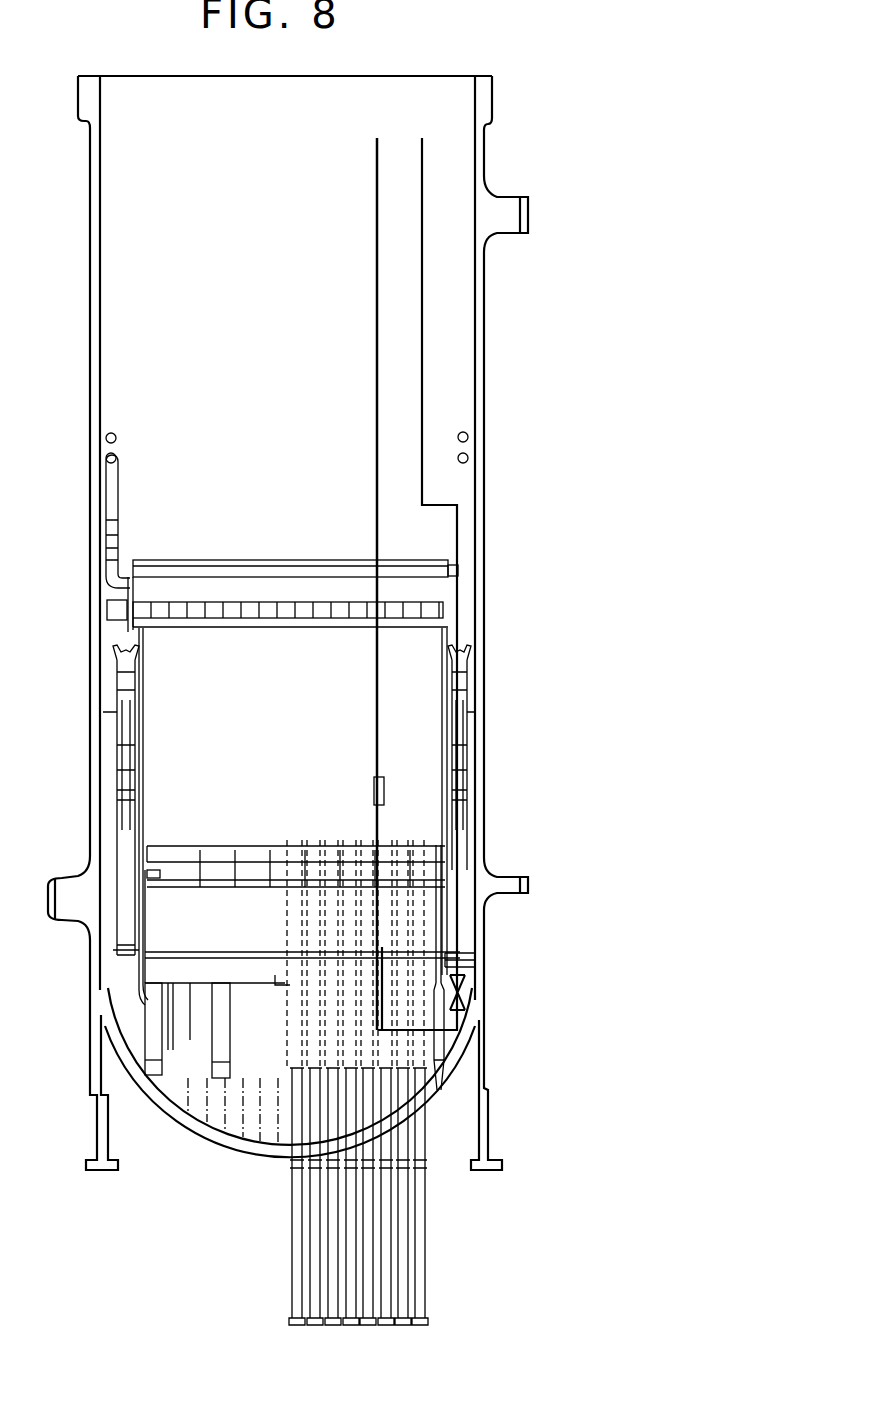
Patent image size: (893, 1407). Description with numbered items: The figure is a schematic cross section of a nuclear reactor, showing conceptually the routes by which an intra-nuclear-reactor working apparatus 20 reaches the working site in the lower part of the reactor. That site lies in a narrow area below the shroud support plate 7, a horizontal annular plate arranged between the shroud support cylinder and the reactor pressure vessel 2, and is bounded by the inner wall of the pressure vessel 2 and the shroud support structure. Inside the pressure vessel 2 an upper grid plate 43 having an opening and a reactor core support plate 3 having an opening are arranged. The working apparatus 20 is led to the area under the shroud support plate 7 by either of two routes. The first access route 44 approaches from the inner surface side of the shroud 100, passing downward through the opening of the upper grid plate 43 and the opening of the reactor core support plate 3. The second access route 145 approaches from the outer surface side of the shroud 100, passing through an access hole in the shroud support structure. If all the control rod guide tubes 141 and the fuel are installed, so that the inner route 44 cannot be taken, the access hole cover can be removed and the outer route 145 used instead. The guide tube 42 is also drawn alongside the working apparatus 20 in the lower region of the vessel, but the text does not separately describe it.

The nuclear reactor pressure vessel 2 is at (485, 381).
The reactor core support plate 3 is at (178, 848).
The shroud support plate 7 is at (463, 990).
The intra-nuclear-reactor working apparatus 20 is at (372, 790).
The guide tube 42 is at (470, 846).
The upper grid plate 43 is at (448, 618).
The access route 44 is at (375, 305).
The shroud 100 is at (447, 678).
The control rod guide tubes 141 is at (441, 1092).
The access route 145 is at (422, 313).